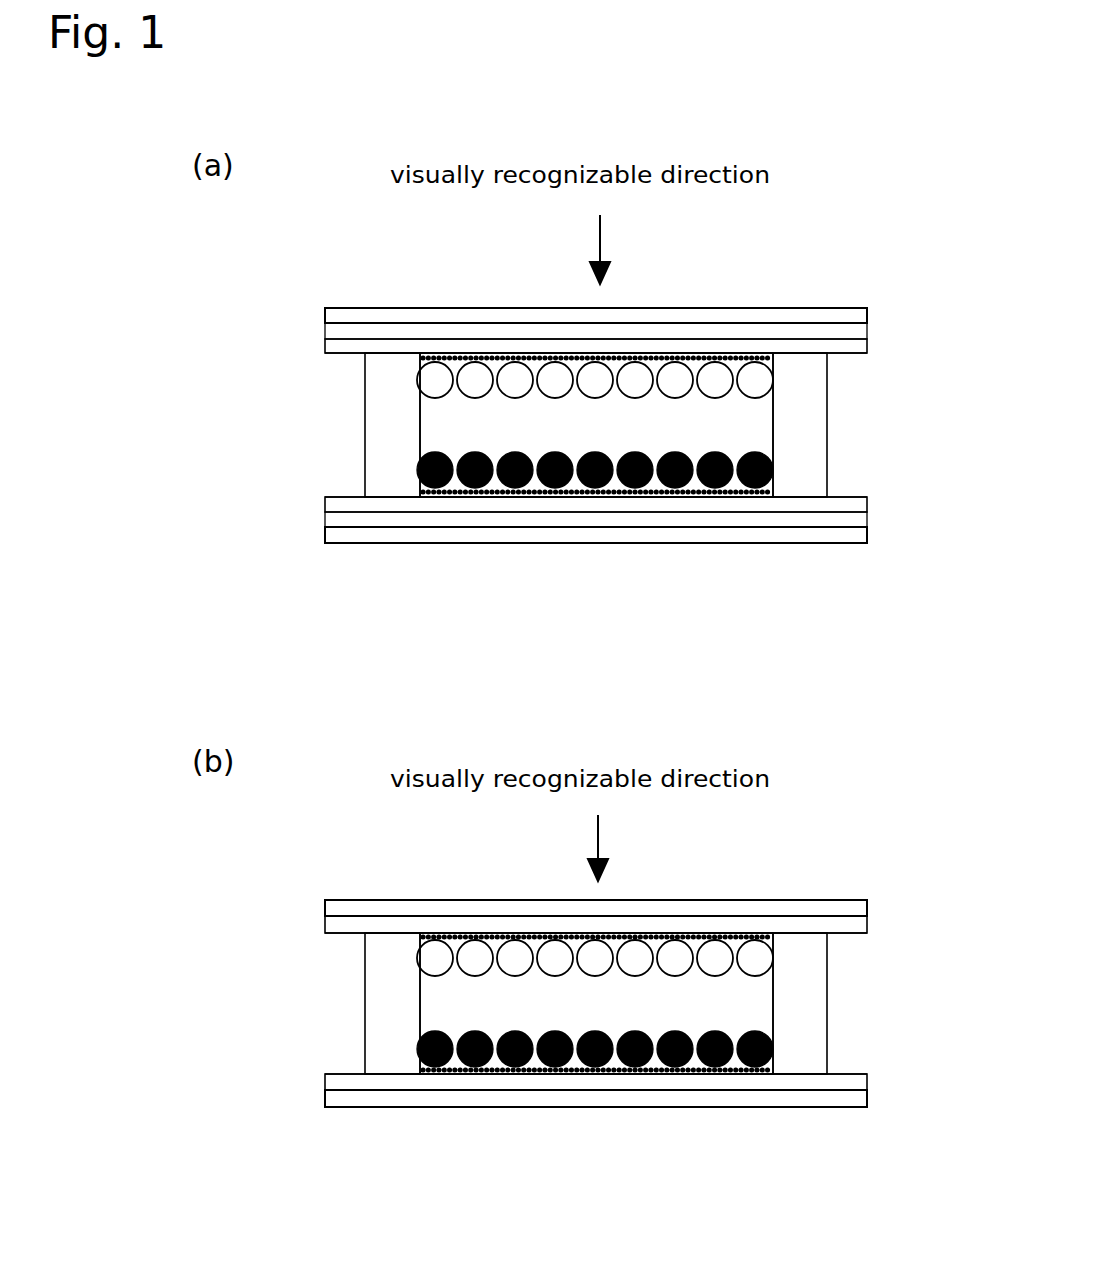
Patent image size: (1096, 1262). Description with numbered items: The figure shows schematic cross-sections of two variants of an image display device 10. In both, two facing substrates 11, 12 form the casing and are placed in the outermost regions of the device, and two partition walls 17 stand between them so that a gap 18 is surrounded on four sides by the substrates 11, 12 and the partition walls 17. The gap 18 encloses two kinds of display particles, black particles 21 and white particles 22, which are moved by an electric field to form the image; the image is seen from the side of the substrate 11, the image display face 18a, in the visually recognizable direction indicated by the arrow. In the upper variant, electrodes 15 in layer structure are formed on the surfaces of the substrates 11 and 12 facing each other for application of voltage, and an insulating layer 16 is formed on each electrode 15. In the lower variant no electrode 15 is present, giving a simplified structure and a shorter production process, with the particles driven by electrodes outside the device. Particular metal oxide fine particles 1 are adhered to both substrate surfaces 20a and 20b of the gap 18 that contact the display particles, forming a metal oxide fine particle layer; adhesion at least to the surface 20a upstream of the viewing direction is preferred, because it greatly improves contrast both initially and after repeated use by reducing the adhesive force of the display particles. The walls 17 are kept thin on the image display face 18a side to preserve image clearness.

The metal oxide fine particles 1 is at (775, 359).
The image display device 10 is at (826, 254).
The substrate 11 is at (325, 318).
The substrate 12 is at (325, 536).
The electrode 15 is at (325, 335).
The insulating layer 16 is at (325, 350).
The partition wall 17 is at (388, 480).
The gap 18 is at (757, 425).
The image display face 18a is at (749, 308).
The substrate surface 20a is at (528, 378).
The substrate surface 20b is at (527, 495).
The black display particles 21 is at (683, 495).
The white display particles 22 is at (670, 378).